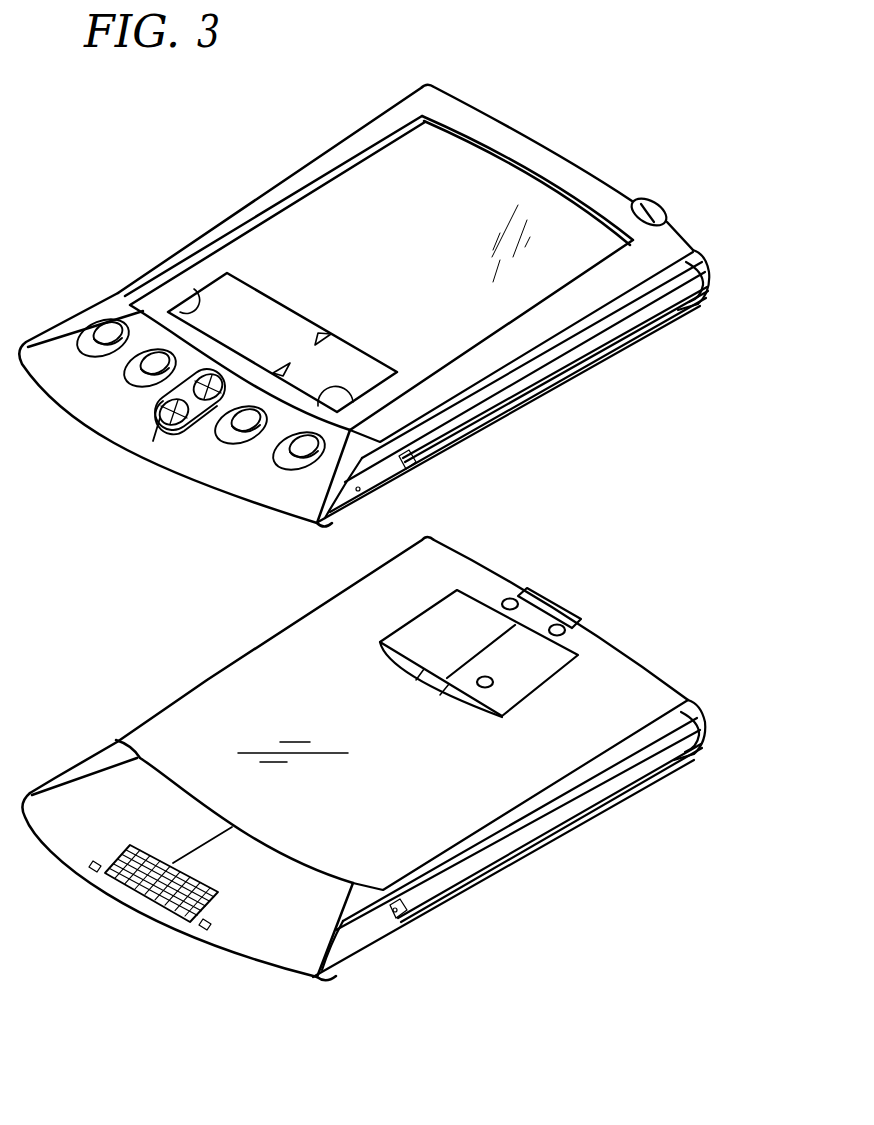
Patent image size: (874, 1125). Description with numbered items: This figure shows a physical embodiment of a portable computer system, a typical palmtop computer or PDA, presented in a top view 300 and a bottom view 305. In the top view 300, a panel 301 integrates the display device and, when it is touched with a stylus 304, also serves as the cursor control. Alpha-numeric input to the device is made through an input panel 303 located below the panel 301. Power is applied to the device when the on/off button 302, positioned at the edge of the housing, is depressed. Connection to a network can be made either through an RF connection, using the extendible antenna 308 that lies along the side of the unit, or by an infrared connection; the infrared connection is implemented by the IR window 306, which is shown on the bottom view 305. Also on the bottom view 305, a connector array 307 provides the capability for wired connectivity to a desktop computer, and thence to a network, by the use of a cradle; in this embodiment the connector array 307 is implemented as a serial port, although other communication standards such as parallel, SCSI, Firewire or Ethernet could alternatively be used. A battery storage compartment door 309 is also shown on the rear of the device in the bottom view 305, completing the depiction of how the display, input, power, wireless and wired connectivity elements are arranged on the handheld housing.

The top view 300 is at (328, 212).
The panel 301 is at (443, 178).
The on/off button 302 is at (663, 201).
The input panel 303 is at (250, 336).
The stylus 304 is at (517, 373).
The bottom view 305 is at (222, 673).
The IR window 306 is at (560, 600).
The connector array 307 is at (127, 900).
The extendible antenna 308 is at (547, 827).
The battery storage compartment door 309 is at (548, 667).